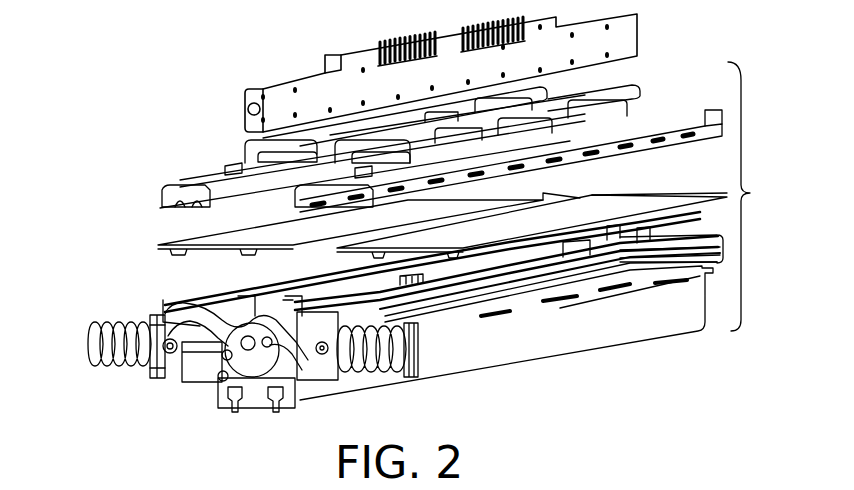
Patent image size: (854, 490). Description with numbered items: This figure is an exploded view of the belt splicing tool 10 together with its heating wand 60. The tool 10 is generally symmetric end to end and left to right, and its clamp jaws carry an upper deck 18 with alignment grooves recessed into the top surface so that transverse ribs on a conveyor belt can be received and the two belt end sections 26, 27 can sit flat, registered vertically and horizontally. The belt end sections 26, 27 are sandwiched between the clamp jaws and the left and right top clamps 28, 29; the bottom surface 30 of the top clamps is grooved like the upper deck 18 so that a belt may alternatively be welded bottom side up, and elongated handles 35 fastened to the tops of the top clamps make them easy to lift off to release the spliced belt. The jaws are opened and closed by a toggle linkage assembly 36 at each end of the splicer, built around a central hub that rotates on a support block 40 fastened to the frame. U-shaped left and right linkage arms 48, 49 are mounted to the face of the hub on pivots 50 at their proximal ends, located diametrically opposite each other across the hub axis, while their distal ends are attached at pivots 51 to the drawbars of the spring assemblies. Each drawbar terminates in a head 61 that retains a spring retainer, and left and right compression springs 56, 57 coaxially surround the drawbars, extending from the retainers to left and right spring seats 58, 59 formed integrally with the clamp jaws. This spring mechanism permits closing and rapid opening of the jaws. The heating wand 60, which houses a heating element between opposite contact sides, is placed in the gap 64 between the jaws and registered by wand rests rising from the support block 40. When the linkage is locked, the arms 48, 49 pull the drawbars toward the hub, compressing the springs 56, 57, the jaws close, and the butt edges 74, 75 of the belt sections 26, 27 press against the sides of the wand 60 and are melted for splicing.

The tool 10 is at (742, 193).
The upper deck 18 is at (203, 295).
The belt end section 26 is at (197, 237).
The belt end section 27 is at (610, 200).
The left top clamp 28 is at (188, 178).
The right top clamp 29 is at (690, 115).
The bottom surface 30 is at (188, 205).
The elongated handle 35 is at (634, 88).
The toggle linkage assembly 36 is at (208, 387).
The support block 40 is at (290, 408).
The left linkage arm 48 is at (183, 317).
The right linkage arm 49 is at (332, 393).
The pivot 50 is at (272, 410).
The pivot 51 is at (150, 325).
The left compression spring 56 is at (107, 370).
The right compression spring 57 is at (390, 383).
The left spring seat 58 is at (150, 377).
The right spring seat 59 is at (367, 383).
The heating wand 60 is at (632, 36).
The head 61 is at (417, 363).
The gap 64 is at (288, 305).
The butt edge 74 is at (547, 197).
The butt edge 75 is at (590, 192).